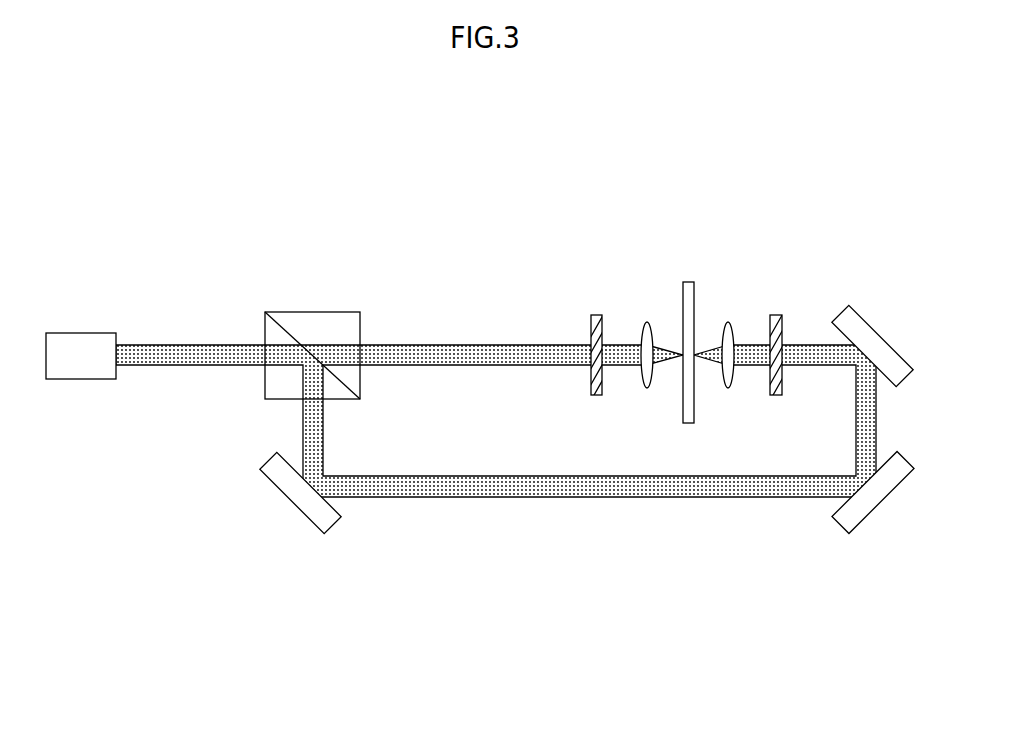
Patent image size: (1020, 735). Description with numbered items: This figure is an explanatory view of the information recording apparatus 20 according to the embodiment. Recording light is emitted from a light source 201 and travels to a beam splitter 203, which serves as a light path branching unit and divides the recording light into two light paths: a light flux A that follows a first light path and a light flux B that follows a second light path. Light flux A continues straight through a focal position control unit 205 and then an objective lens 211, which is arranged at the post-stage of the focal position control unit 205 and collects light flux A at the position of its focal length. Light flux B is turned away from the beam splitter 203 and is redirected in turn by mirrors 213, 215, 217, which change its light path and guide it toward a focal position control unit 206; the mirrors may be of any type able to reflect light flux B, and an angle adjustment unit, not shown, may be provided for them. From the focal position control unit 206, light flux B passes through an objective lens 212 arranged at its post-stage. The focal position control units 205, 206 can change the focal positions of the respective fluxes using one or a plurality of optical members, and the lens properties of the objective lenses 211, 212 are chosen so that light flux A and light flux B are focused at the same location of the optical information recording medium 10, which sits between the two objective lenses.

The information recording apparatus 20 is at (456, 165).
The light source 201 is at (80, 333).
The beam splitter 203 is at (313, 312).
The focal position control unit 205 is at (598, 315).
The focal position control unit 206 is at (777, 315).
The objective lens 211 is at (647, 322).
The objective lens 212 is at (728, 322).
The optical information recording medium 10 is at (690, 282).
The mirror 213 is at (300, 503).
The mirror 215 is at (842, 533).
The mirror 217 is at (841, 311).